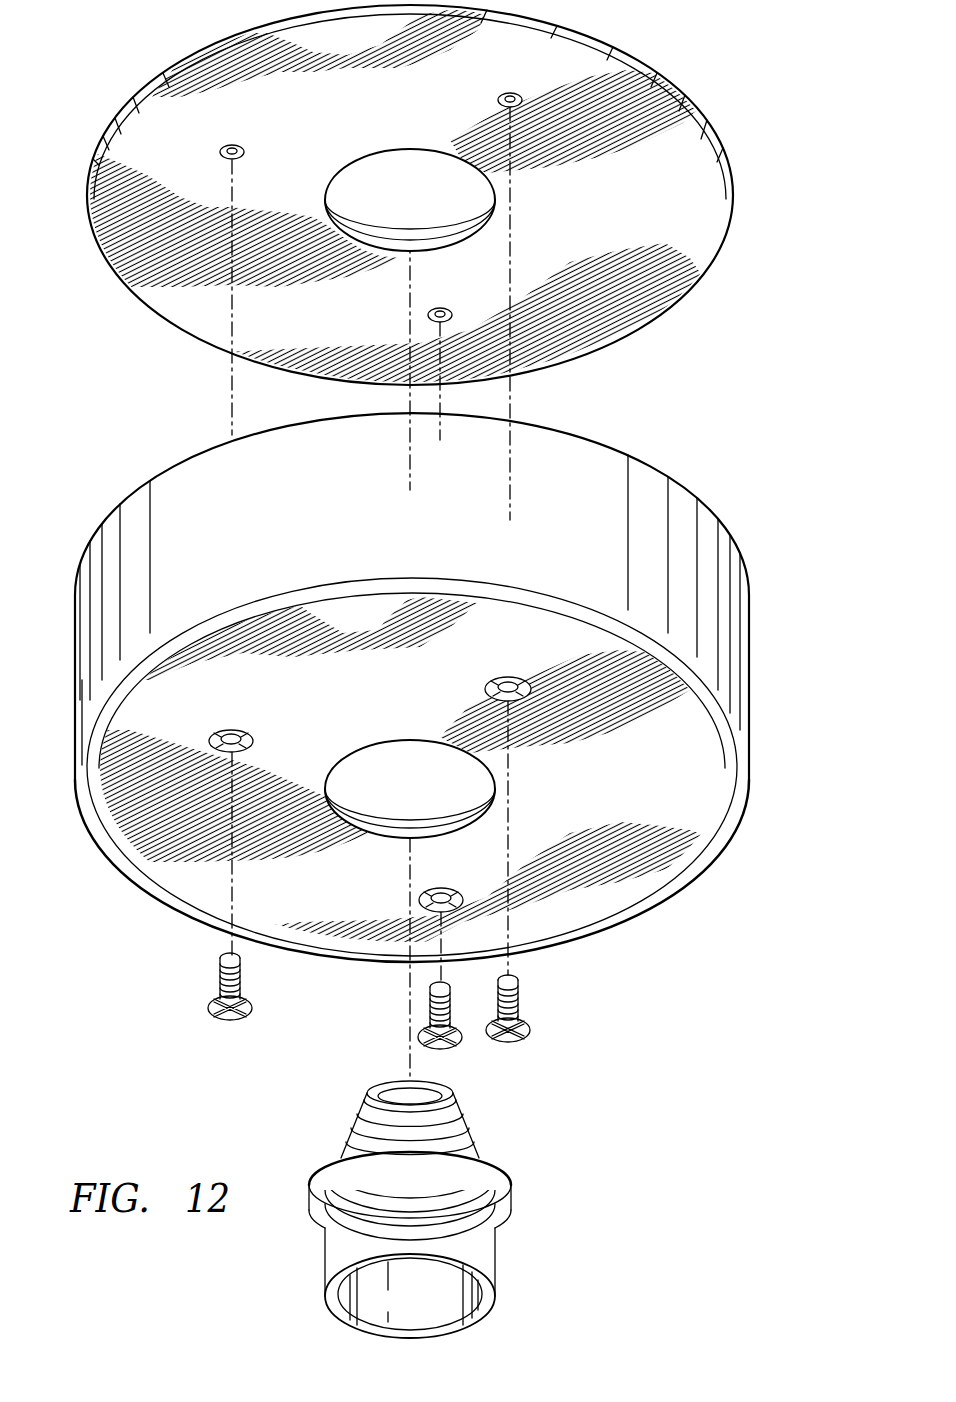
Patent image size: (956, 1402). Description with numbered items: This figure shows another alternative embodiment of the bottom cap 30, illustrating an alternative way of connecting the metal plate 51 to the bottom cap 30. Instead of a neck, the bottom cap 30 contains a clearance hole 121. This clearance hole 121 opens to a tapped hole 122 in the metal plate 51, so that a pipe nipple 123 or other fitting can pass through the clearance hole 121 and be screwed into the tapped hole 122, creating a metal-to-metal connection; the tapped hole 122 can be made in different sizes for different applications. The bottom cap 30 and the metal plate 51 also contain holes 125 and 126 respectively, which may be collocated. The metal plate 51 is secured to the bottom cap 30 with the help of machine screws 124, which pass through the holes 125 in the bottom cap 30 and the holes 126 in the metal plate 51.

The bottom cap 30 is at (77, 645).
The metal plate 51 is at (709, 291).
The clearance hole 121 is at (392, 737).
The tapped hole 122 is at (394, 151).
The pipe nipple 123 is at (497, 1256).
The machine screws 124 is at (210, 1020).
The holes in bottom cap 125 is at (244, 743).
The holes in metal plate 126 is at (240, 153).